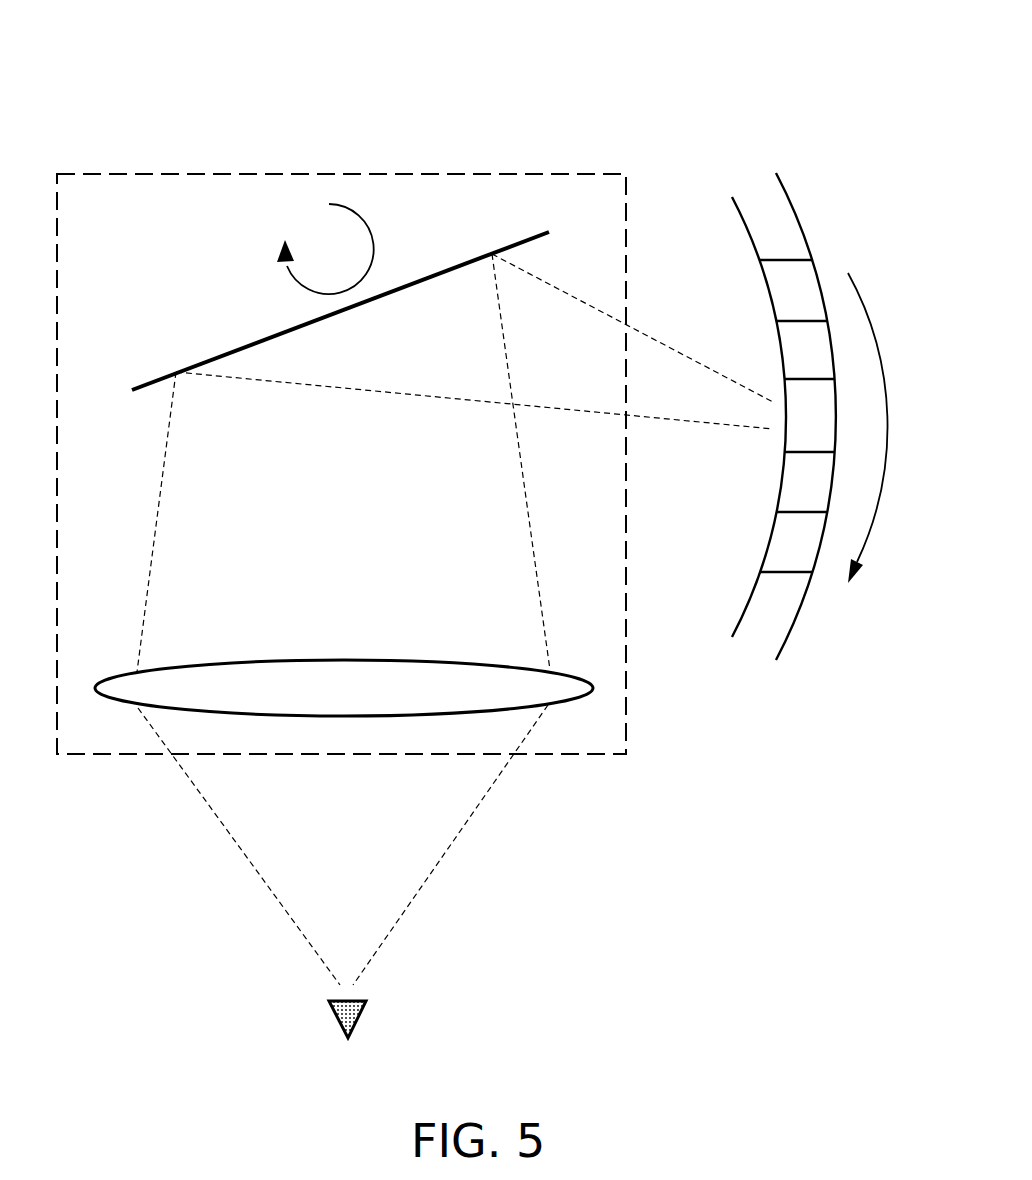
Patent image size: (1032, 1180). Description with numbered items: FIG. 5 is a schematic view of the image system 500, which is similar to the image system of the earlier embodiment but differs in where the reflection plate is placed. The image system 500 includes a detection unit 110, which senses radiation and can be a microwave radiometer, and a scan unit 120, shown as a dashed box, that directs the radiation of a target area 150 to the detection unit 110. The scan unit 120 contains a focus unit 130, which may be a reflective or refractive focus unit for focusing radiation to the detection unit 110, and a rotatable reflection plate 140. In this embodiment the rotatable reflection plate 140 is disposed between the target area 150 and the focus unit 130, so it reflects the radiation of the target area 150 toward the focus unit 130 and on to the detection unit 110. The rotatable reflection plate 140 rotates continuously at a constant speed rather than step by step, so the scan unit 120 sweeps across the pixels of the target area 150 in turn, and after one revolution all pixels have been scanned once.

The image system 500 is at (796, 84).
The detection unit 110 is at (363, 1018).
The scan unit 120 is at (627, 493).
The focus unit 130 is at (594, 686).
The rotatable reflection plate 140 is at (232, 350).
The target area 150 is at (795, 208).